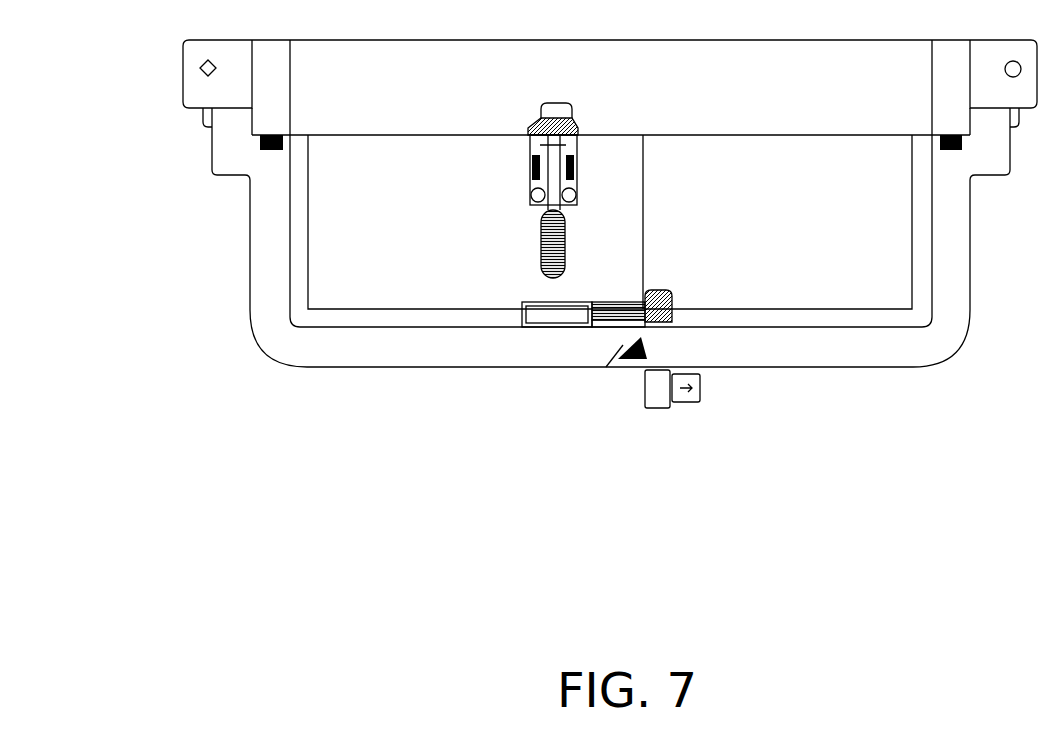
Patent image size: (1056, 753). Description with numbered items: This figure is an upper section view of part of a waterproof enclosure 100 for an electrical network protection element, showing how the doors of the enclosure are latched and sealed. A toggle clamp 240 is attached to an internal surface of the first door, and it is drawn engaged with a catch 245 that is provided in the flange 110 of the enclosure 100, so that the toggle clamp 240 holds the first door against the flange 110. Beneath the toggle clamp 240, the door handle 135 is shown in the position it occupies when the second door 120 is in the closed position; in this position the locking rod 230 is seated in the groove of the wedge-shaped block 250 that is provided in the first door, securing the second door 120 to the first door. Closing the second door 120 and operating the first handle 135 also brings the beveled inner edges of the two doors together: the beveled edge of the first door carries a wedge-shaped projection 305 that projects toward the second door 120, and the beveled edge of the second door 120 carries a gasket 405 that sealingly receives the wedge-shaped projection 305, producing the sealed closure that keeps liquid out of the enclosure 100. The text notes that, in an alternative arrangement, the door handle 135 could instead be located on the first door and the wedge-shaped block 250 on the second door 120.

The enclosure 100 is at (264, 548).
The flange 110 is at (788, 91).
The second door 120 is at (855, 367).
The first handle 135 is at (665, 405).
The locking rod 230 is at (622, 300).
The toggle clamp 240 is at (503, 196).
The catch 245 is at (540, 110).
The wedge-shaped block 250 is at (537, 303).
The wedge-shaped projection 305 is at (628, 350).
The gasket 405 is at (648, 347).